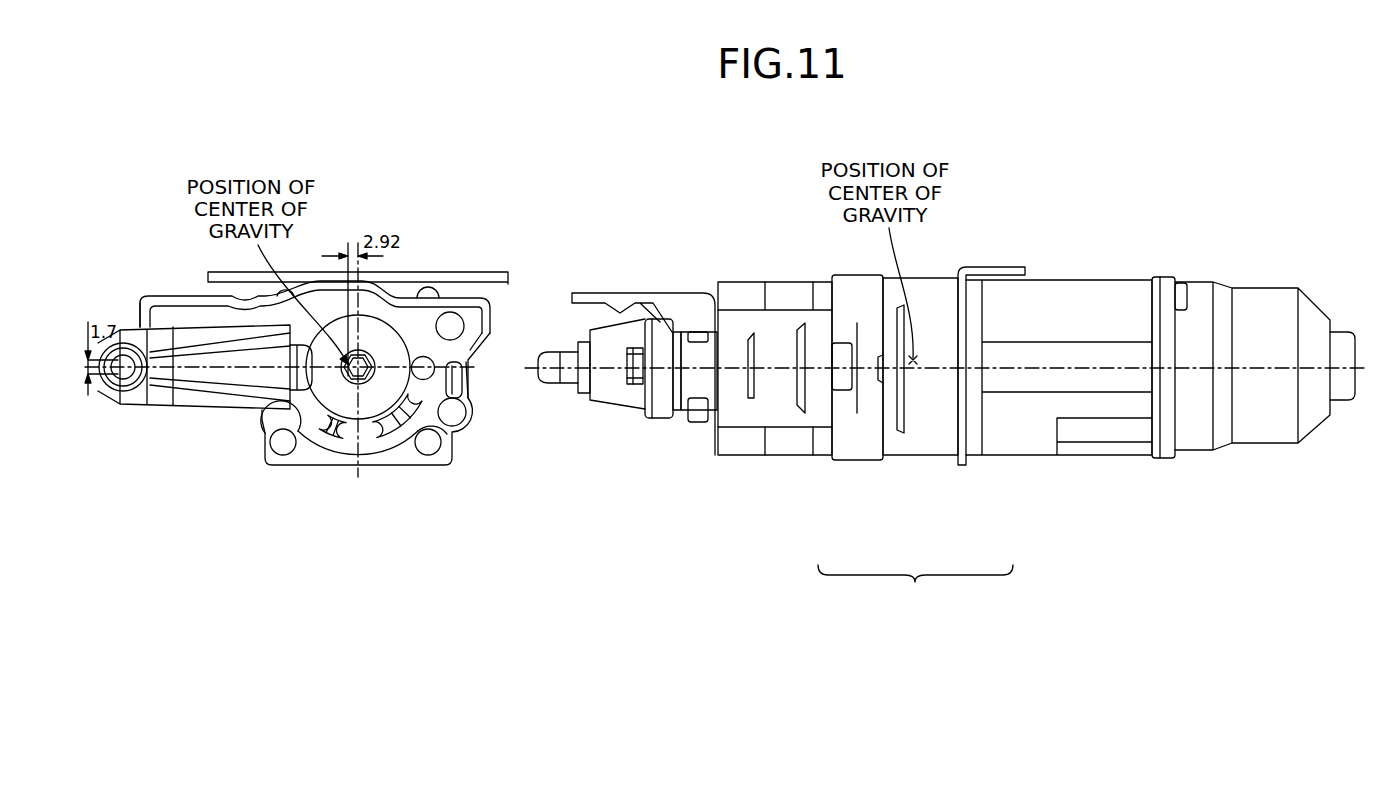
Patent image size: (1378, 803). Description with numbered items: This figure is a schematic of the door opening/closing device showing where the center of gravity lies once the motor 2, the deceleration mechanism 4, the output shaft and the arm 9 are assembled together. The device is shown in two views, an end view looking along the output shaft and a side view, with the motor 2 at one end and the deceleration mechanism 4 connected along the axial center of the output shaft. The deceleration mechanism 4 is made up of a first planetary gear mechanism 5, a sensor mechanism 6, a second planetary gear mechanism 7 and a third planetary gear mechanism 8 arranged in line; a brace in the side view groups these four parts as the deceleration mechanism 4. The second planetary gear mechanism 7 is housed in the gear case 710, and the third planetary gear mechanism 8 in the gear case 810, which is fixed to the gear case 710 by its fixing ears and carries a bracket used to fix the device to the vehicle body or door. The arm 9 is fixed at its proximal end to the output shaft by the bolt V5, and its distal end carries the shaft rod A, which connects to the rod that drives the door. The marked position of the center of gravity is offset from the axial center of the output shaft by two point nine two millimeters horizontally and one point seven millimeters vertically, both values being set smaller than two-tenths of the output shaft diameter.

The motor 2 is at (1318, 290).
The deceleration mechanism 4 is at (915, 585).
The first planetary gear mechanism 5 is at (1053, 463).
The sensor mechanism 6 is at (935, 464).
The second planetary gear mechanism 7 is at (870, 466).
The third planetary gear mechanism 8 is at (791, 462).
The arm 9 is at (147, 413).
The gear case 710 is at (409, 452).
The gear case 810 is at (468, 362).
The shaft rod A is at (100, 386).
The bolt V5 is at (345, 392).